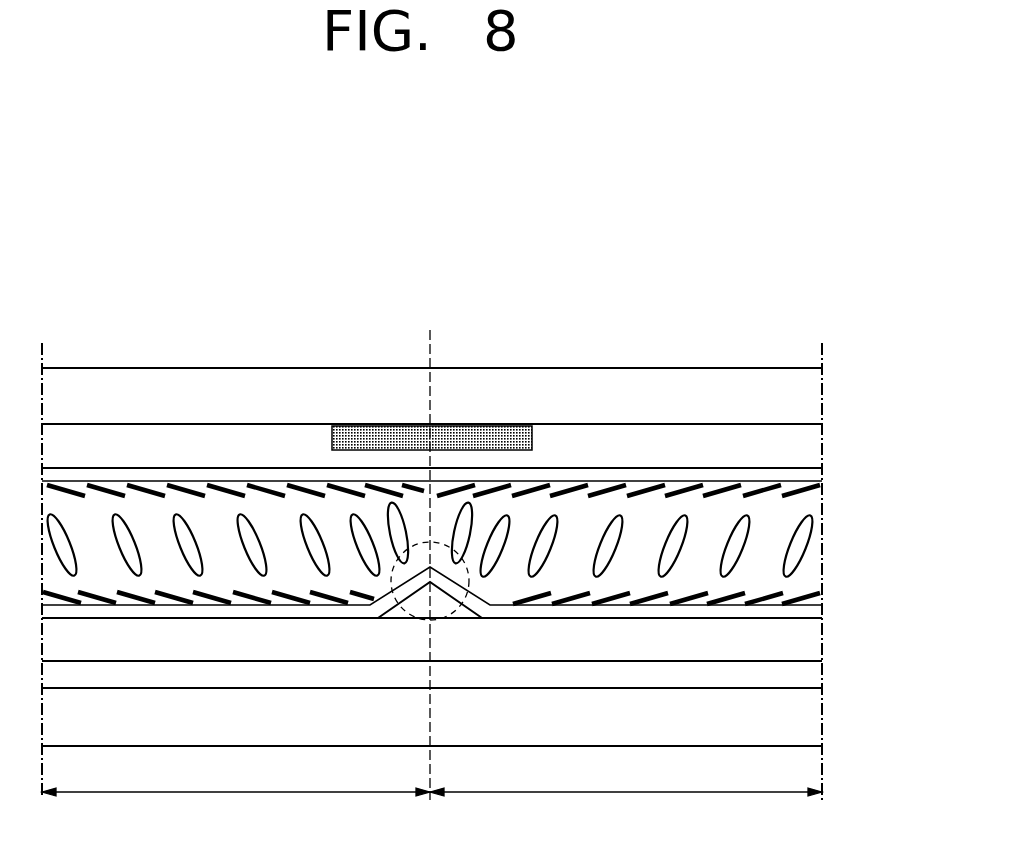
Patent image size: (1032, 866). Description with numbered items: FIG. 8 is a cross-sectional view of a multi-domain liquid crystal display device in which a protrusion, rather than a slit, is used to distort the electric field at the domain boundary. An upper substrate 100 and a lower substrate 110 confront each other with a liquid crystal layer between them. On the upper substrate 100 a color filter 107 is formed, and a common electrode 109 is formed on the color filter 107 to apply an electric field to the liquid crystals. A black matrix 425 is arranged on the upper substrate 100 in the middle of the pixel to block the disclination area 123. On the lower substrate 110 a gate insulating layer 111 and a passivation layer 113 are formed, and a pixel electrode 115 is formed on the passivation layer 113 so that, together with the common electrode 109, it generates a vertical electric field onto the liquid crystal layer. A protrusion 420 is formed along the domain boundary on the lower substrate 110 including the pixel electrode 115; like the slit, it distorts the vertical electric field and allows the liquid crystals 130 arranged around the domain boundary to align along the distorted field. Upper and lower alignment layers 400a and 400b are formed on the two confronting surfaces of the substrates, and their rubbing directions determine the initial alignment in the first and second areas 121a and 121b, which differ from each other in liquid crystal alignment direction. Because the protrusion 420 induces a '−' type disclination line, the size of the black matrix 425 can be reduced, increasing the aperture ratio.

The upper substrate 100 is at (810, 393).
The color filter 107 is at (810, 440).
The black matrix 425 is at (380, 432).
The disclination area 123 is at (432, 395).
The common electrode 109 is at (812, 478).
The upper alignment layer 400a is at (800, 492).
The lower alignment layer 400b is at (800, 592).
The pixel electrode 115 is at (812, 613).
The protrusion 420 is at (400, 606).
The liquid crystals 130 is at (463, 600).
The passivation layer 113 is at (810, 642).
The gate insulating layer 111 is at (810, 678).
The lower substrate 110 is at (810, 719).
The first area 121a is at (236, 780).
The second area 121b is at (626, 782).